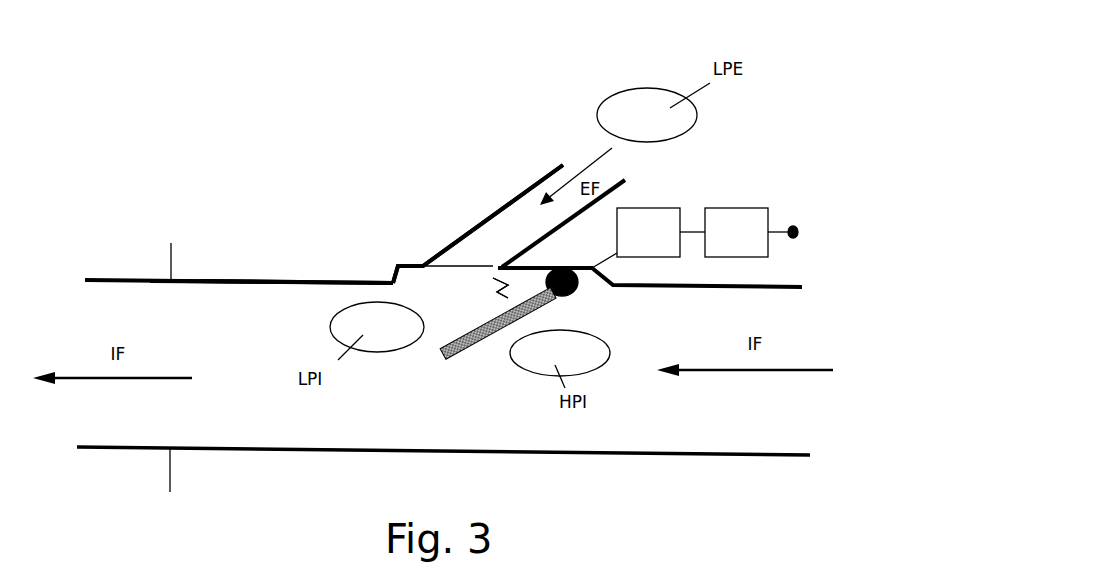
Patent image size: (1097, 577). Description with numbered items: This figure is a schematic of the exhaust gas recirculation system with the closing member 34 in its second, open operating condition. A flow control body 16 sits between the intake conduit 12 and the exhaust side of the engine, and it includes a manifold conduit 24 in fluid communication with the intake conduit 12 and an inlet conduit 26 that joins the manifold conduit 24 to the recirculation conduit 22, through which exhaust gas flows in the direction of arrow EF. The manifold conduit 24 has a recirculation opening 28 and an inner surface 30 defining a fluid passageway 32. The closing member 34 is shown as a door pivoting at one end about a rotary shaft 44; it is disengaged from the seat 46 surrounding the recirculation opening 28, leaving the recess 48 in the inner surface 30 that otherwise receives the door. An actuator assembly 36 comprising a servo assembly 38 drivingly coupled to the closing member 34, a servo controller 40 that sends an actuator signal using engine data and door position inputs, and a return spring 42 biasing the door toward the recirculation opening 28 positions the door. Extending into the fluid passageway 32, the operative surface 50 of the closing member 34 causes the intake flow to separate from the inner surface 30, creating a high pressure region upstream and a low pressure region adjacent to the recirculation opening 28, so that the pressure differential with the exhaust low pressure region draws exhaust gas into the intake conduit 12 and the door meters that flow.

The intake conduit 12 is at (146, 278).
The flow control body 16 is at (354, 154).
The recirculation conduit 22 is at (538, 180).
The manifold conduit 24 is at (265, 280).
The inlet conduit 26 is at (507, 202).
The recirculation opening 28 is at (462, 267).
The inner surface 30 is at (228, 283).
The fluid passageway 32 is at (297, 428).
The closing member 34 is at (443, 360).
The actuator assembly 36 is at (700, 190).
The servo assembly 38 is at (636, 238).
The servo controller 40 is at (784, 232).
The return spring 42 is at (492, 280).
The rotary shaft 44 is at (580, 288).
The seat 46 is at (495, 265).
The recess 48 is at (408, 273).
The operative surface 50 is at (473, 353).